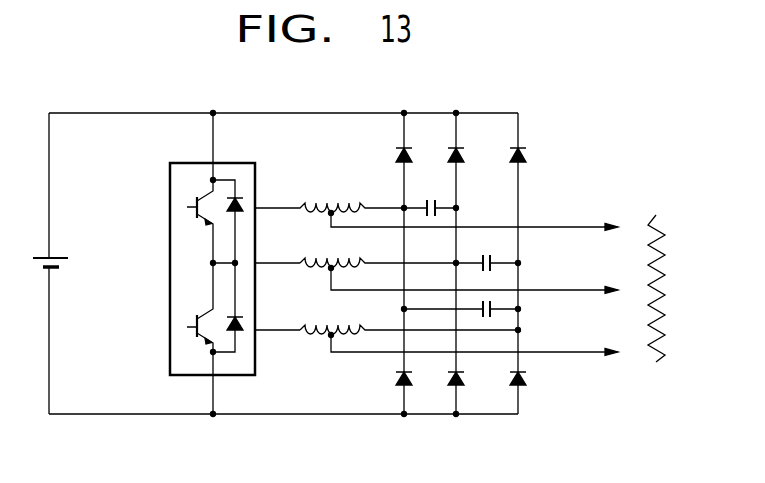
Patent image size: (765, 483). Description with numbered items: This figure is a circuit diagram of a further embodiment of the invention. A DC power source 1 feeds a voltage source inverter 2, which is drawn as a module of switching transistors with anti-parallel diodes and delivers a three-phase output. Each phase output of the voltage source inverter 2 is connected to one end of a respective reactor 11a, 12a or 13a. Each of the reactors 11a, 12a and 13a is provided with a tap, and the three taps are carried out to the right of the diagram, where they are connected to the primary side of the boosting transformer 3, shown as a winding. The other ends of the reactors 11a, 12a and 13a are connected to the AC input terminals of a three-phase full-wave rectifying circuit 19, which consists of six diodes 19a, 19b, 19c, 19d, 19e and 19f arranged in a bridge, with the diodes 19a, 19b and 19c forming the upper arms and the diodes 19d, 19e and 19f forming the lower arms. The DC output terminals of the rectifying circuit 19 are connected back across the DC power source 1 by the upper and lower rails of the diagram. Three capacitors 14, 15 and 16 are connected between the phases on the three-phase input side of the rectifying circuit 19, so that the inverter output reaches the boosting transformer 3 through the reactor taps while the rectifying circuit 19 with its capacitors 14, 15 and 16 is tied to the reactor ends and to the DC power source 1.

The DC power source 1 is at (66, 252).
The voltage source inverter 2 is at (235, 162).
The boosting transformer 3 is at (655, 212).
The reactor 11a is at (334, 200).
The reactor 12a is at (325, 255).
The reactor 13a is at (325, 322).
The capacitor 14 is at (431, 196).
The capacitor 15 is at (486, 252).
The capacitor 16 is at (504, 301).
The three-phase full-wave rectifying circuit 19 is at (540, 78).
The diode 19a is at (397, 155).
The diode 19b is at (450, 155).
The diode 19c is at (512, 158).
The diode 19d is at (396, 380).
The diode 19e is at (461, 389).
The diode 19f is at (522, 387).